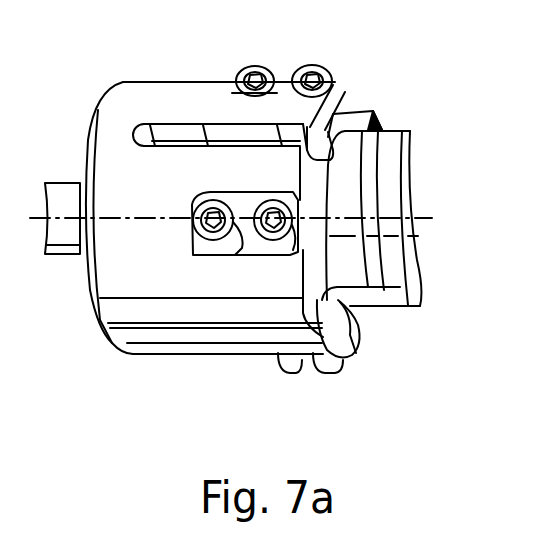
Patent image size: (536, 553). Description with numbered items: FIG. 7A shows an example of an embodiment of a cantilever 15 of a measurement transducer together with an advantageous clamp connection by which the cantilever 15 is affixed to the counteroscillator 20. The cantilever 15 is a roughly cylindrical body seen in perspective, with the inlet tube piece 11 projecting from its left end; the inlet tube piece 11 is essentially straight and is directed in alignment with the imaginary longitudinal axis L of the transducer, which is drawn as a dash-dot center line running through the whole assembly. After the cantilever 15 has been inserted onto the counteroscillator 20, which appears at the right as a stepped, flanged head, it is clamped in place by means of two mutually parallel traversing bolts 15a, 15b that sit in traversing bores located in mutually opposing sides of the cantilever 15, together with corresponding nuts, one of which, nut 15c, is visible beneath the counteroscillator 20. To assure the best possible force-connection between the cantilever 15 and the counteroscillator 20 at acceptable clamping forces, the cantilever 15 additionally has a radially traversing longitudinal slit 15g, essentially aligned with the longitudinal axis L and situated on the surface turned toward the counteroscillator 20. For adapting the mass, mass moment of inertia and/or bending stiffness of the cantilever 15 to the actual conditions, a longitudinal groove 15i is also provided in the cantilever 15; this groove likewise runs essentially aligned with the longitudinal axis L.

The inlet tube piece 11 is at (65, 192).
The cantilever 15 is at (93, 324).
The traversing bolt 15a is at (337, 87).
The traversing bolt 15b is at (282, 243).
The nut 15c is at (358, 357).
The longitudinal slit 15g is at (190, 326).
The longitudinal groove 15i is at (173, 133).
The counteroscillator 20 is at (403, 126).
The longitudinal axis L is at (421, 218).